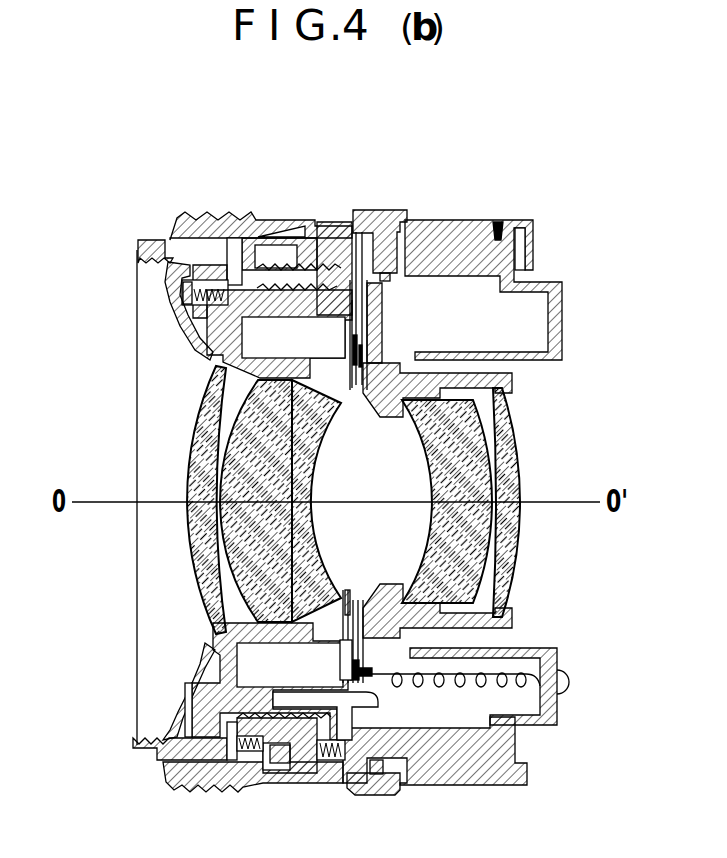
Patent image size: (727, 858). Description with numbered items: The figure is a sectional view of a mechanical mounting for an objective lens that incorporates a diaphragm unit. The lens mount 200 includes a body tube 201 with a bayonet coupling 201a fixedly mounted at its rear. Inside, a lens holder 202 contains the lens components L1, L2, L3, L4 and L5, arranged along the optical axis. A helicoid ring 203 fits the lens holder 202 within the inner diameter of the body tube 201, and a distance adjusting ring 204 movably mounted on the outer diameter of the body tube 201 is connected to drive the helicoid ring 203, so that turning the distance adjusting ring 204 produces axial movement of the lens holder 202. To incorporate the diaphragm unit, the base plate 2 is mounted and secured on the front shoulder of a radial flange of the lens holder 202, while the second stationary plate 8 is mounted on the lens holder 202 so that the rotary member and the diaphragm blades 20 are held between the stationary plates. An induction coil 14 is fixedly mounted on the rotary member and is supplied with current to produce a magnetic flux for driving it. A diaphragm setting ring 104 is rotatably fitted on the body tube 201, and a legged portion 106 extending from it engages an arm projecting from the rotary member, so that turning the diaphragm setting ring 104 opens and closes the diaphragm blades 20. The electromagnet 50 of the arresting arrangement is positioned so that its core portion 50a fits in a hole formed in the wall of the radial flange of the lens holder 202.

The lens mount 200 is at (356, 186).
The distance adjusting ring 204 is at (232, 217).
The diaphragm setting ring 104 is at (393, 212).
The body tube 201 is at (452, 221).
The bayonet coupling 201a is at (535, 228).
The legged portion 106 is at (362, 287).
The lens holder 202 is at (283, 306).
The helicoid ring 203 is at (324, 283).
The second stationary plate 8 is at (341, 635).
The diaphragm blades 20 is at (351, 393).
The base plate 2 is at (362, 392).
The electromagnet 50 is at (353, 672).
The core portion 50a is at (372, 684).
The induction coil 14 is at (470, 694).
The lens component L1 is at (216, 380).
The lens component L2 is at (233, 445).
The lens component L3 is at (310, 465).
The lens component L4 is at (427, 450).
The lens component L5 is at (513, 453).